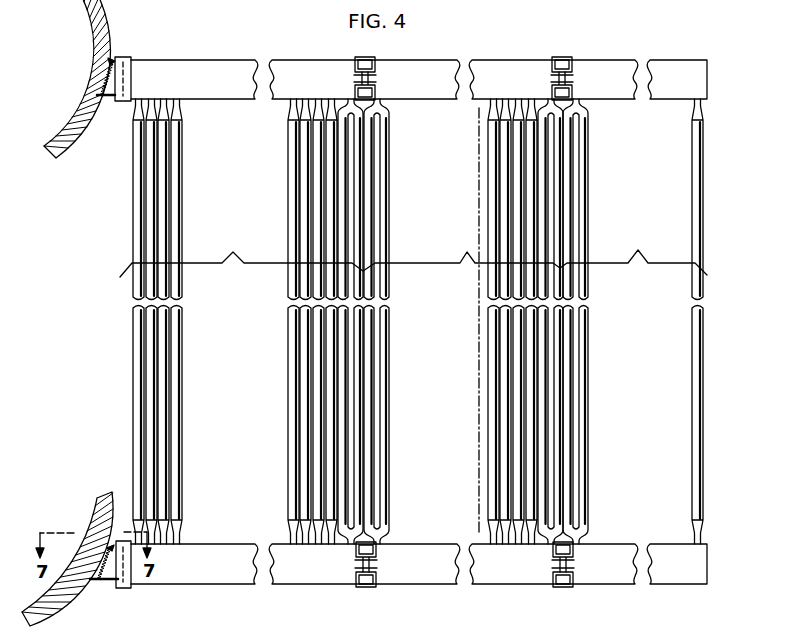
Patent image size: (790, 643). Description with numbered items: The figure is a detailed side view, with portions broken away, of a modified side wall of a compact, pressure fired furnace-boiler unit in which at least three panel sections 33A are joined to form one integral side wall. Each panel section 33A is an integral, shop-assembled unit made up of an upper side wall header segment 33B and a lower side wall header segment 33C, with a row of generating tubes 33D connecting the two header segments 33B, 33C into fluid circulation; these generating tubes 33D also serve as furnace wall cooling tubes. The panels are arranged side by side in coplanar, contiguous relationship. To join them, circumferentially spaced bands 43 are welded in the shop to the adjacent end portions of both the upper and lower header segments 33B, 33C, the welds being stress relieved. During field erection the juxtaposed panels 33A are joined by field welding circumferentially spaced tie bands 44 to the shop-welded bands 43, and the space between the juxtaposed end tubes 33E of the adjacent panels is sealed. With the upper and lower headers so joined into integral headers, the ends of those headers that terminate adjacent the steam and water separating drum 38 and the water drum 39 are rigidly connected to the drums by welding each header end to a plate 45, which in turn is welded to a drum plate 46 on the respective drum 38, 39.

The panel section 33A is at (413, 254).
The upper side wall header segment 33B is at (293, 73).
The lower side wall header segment 33C is at (205, 563).
The generating tubes 33D is at (307, 393).
The end tubes 33E is at (372, 182).
The steam and water separating drum 38 is at (70, 152).
The water drum 39 is at (66, 593).
The bands 43 is at (356, 72).
The tie bands 44 is at (368, 62).
The plate 45 is at (125, 580).
The drum plate 46 is at (105, 572).